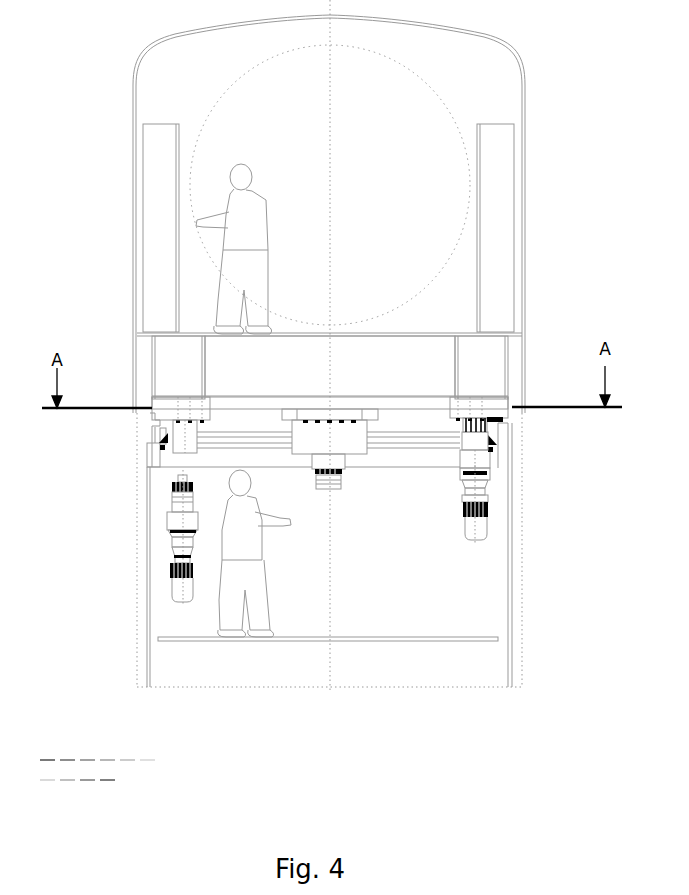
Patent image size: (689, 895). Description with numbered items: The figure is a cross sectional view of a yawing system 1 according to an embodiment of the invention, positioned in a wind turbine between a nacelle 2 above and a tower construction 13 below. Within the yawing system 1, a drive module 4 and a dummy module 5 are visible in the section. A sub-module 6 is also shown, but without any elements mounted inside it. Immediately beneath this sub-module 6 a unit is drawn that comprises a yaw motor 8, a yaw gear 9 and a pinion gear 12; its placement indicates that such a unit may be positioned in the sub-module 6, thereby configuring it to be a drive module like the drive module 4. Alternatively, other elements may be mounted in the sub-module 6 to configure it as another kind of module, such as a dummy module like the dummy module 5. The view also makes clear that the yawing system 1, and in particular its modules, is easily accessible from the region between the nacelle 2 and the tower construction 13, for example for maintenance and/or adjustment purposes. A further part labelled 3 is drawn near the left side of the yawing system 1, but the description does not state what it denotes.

The yawing system 1 is at (513, 408).
The nacelle 2 is at (520, 240).
The left support mount 3 is at (153, 432).
The drive module 4 is at (480, 457).
The dummy module 5 is at (325, 457).
The sub-module 6 is at (167, 417).
The yaw motor 8 is at (183, 585).
The yaw gear 9 is at (192, 523).
The pinion gear 12 is at (183, 487).
The tower construction 13 is at (512, 615).